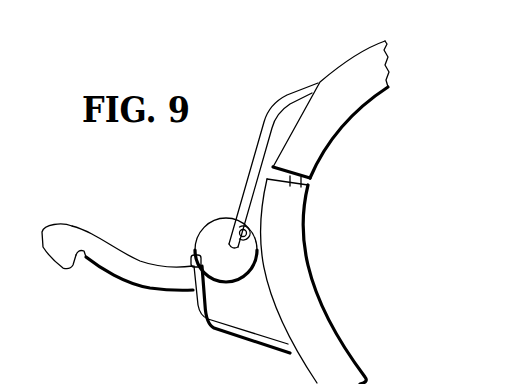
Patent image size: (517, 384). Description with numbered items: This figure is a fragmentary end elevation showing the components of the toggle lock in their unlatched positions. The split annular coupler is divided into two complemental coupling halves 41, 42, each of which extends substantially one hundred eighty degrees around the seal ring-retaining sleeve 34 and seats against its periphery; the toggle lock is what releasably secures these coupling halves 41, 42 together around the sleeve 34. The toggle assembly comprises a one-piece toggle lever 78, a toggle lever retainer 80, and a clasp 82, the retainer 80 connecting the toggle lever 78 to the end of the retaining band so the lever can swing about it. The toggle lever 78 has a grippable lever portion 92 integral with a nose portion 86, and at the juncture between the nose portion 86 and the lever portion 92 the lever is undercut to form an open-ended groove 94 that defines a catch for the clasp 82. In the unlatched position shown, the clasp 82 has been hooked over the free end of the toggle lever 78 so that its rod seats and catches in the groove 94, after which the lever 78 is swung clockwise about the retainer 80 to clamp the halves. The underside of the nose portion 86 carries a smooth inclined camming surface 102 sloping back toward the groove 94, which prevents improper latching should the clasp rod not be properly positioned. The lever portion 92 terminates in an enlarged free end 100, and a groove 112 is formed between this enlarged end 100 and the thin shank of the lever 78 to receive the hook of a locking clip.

The coupling half 41 is at (352, 105).
The coupling half 42 is at (300, 285).
The seal ring-retaining sleeve 34 is at (303, 183).
The toggle lever retainer 80 is at (282, 97).
The nose portion 86 is at (250, 220).
The camming surface 102 is at (210, 227).
The groove 94 is at (190, 262).
The clasp 82 is at (240, 337).
The lever portion 92 is at (162, 290).
The free end 100 is at (53, 255).
The groove 112 is at (85, 263).
The toggle lever 78 is at (132, 294).